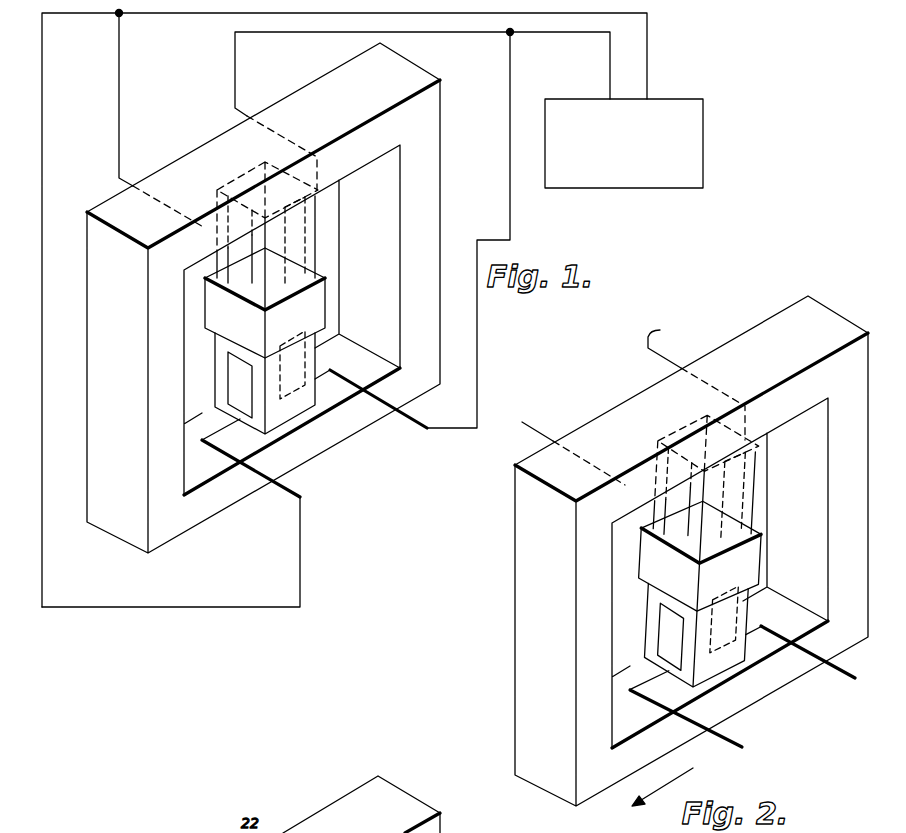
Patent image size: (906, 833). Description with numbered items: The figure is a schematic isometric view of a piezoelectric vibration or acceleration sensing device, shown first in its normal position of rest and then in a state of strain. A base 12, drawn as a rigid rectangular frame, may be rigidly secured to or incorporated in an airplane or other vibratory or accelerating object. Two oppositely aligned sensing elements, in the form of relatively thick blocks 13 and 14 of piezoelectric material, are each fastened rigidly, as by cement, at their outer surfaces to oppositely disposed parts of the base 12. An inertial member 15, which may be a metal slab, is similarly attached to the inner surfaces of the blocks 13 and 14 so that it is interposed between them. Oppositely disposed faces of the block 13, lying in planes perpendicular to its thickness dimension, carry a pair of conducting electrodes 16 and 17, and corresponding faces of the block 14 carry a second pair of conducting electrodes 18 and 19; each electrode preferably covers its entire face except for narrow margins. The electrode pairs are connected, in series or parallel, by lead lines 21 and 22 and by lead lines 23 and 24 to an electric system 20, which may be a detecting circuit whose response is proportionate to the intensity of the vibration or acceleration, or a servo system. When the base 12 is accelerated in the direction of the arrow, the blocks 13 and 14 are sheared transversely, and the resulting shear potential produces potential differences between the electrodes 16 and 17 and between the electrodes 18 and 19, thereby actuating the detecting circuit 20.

In FIG. 1, the base 12 is at (436, 222).
In FIG. 2, the base 12 is at (753, 342).
In FIG. 1, the block of piezoelectric material 13 is at (305, 270).
In FIG. 2, the block of piezoelectric material 13 is at (735, 530).
In FIG. 1, the block of piezoelectric material 14 is at (310, 393).
In FIG. 2, the block of piezoelectric material 14 is at (728, 643).
In FIG. 1, the inertial member 15 is at (335, 290).
In FIG. 2, the inertial member 15 is at (752, 548).
In FIG. 1, the conducting electrode 16 is at (250, 270).
In FIG. 2, the conducting electrode 16 is at (658, 500).
In FIG. 1, the conducting electrode 17 is at (340, 194).
In FIG. 2, the conducting electrode 17 is at (762, 451).
In FIG. 1, the conducting electrode 18 is at (238, 375).
In FIG. 2, the conducting electrode 18 is at (664, 620).
In FIG. 1, the conducting electrode 19 is at (312, 357).
In FIG. 2, the conducting electrode 19 is at (745, 603).
In FIG. 1, the electric system 20 is at (703, 136).
In FIG. 1, the lead line 21 is at (191, 15).
In FIG. 2, the lead line 21 is at (559, 428).
In FIG. 1, the lead line 22 is at (322, 34).
In FIG. 2, the lead line 22 is at (696, 381).
In FIG. 1, the lead line 23 is at (301, 500).
In FIG. 2, the lead line 23 is at (727, 738).
In FIG. 1, the lead line 24 is at (423, 432).
In FIG. 2, the lead line 24 is at (850, 683).